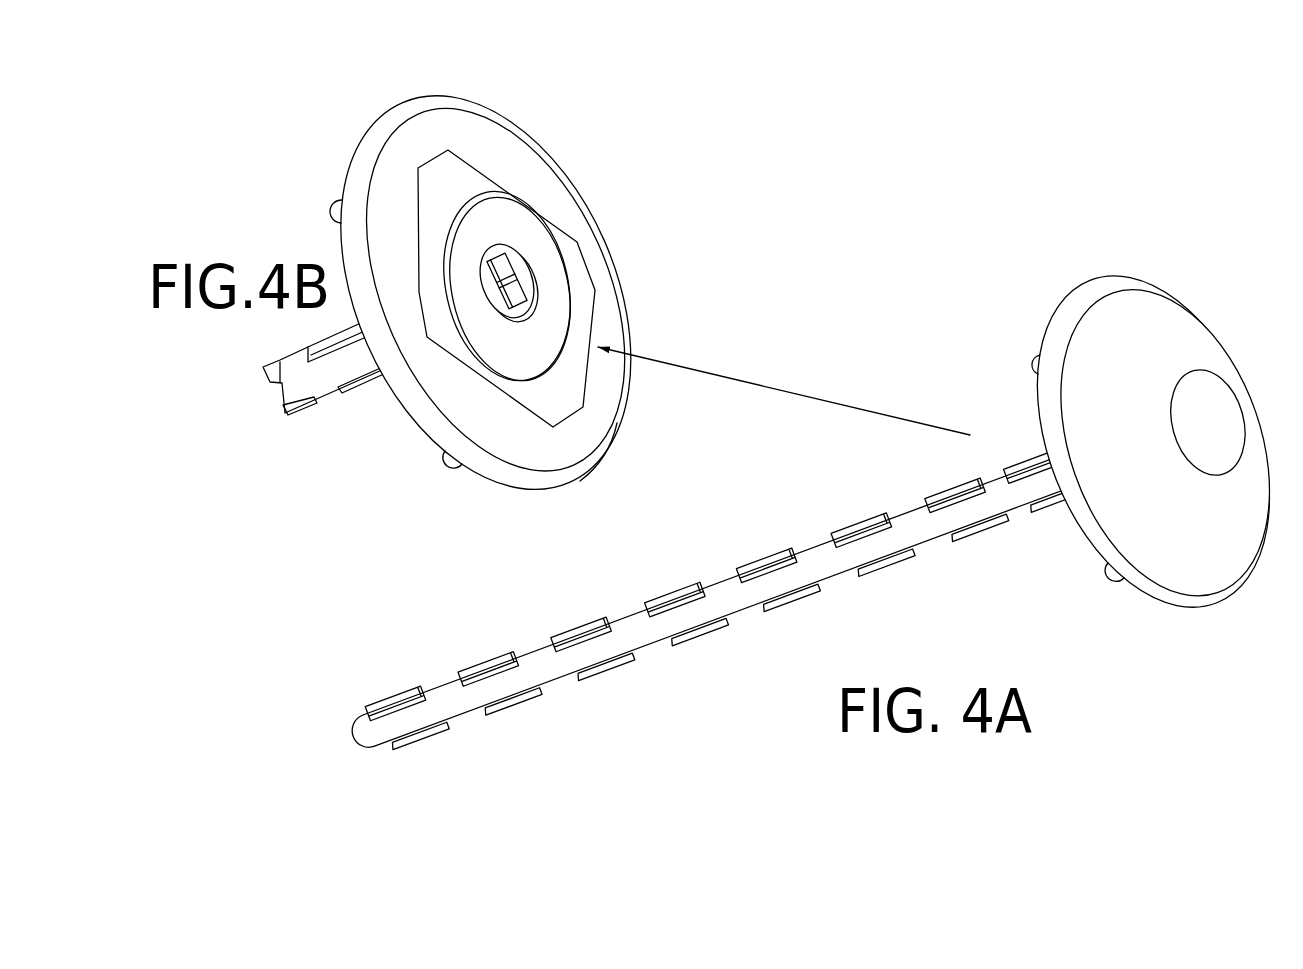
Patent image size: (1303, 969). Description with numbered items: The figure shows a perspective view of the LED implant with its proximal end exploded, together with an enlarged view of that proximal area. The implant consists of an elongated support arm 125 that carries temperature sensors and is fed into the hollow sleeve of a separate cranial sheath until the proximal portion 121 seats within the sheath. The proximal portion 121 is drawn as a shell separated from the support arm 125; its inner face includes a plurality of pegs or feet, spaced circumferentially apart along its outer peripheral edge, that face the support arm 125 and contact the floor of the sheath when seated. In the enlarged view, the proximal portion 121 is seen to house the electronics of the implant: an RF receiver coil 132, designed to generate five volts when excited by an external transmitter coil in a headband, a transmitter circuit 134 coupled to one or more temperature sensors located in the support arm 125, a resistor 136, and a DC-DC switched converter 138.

In FIG. 4A, the proximal portion 121 is at (1062, 295).
In FIG. 4A, the support arm 125 is at (1019, 515).
In FIG. 4B, the RF receiver coil 132 is at (572, 278).
In FIG. 4B, the transmitter circuit 134 is at (513, 255).
In FIG. 4B, the resistor 136 is at (478, 273).
In FIG. 4B, the DC-DC switched converter 138 is at (522, 292).